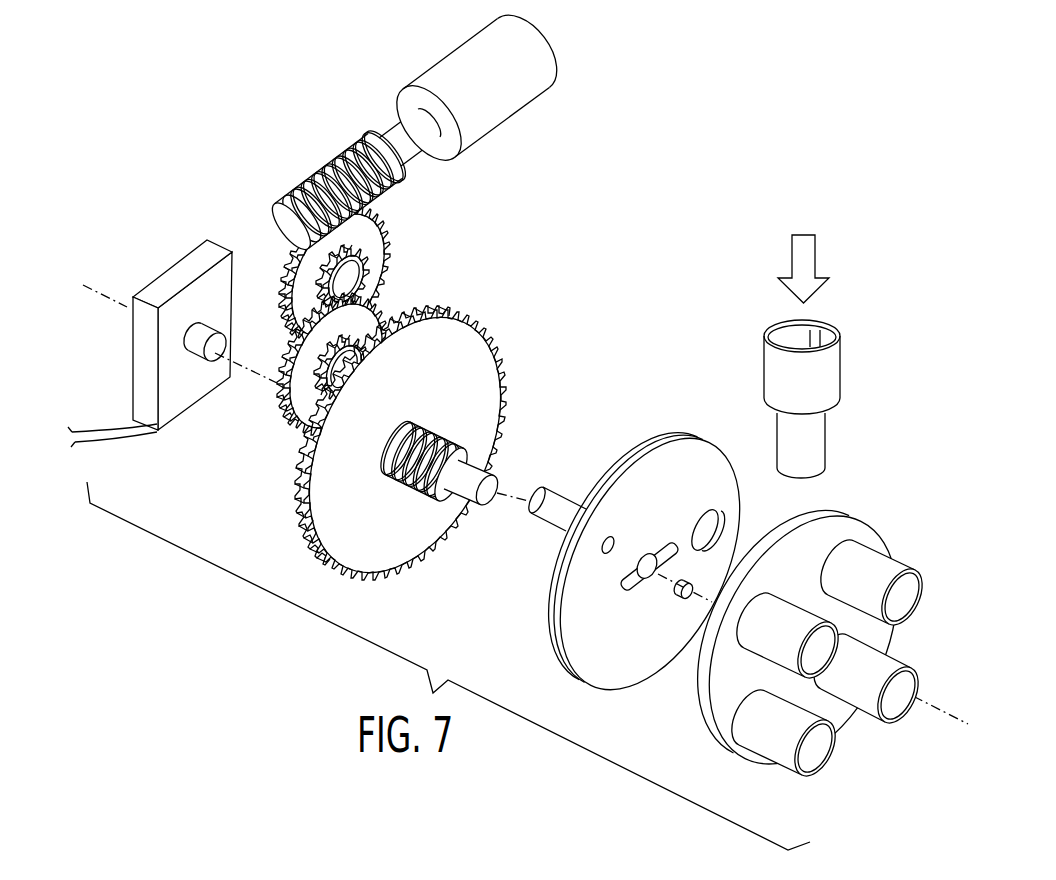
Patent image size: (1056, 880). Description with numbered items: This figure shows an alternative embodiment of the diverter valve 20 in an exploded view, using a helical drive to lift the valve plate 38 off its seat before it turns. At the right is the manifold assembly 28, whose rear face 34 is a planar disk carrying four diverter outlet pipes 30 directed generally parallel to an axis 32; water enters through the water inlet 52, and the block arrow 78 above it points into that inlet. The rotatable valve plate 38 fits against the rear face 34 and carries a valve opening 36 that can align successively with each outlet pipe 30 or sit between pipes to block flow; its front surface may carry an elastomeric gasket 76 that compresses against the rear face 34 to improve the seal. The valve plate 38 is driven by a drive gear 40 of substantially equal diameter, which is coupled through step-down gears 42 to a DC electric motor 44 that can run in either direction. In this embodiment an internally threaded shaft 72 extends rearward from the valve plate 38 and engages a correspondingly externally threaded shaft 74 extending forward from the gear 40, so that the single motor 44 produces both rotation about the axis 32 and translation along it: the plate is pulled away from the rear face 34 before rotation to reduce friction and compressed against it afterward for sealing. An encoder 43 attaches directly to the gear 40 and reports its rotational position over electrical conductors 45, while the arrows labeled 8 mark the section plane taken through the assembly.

The section line 8- 8 is at (83, 285).
The diverter valve 20 is at (937, 425).
The manifold assembly 28 is at (844, 633).
The diverter outlet pipes 30 is at (875, 661).
The axis 32 is at (933, 708).
The rear face 34 is at (823, 507).
The valve opening 36 is at (722, 533).
The valve plate 38 is at (627, 579).
The drive gear 40 is at (323, 540).
The step-down gears 42 is at (287, 312).
The encoder 43 is at (188, 263).
The DC electric motor 44 is at (467, 72).
The electrical conductors 45 is at (128, 424).
The water inlet 52 is at (843, 367).
The internally threaded shaft 72 is at (540, 537).
The externally threaded shaft 74 is at (407, 478).
The elastomeric gasket 76 is at (618, 673).
The insertion direction arrow 78 is at (815, 253).